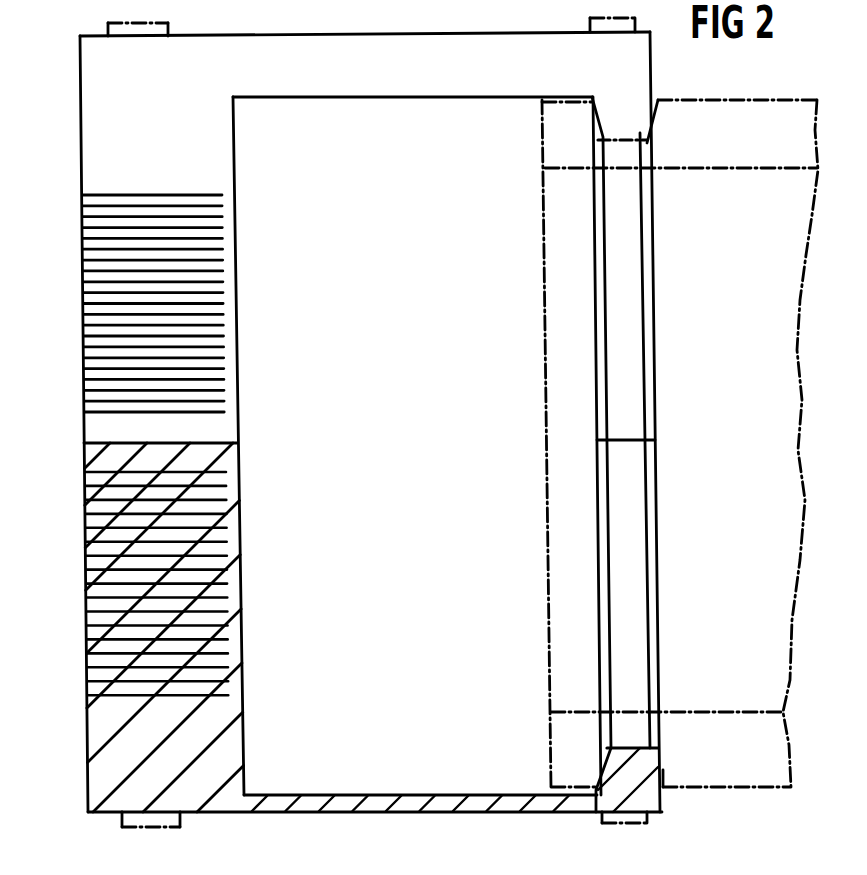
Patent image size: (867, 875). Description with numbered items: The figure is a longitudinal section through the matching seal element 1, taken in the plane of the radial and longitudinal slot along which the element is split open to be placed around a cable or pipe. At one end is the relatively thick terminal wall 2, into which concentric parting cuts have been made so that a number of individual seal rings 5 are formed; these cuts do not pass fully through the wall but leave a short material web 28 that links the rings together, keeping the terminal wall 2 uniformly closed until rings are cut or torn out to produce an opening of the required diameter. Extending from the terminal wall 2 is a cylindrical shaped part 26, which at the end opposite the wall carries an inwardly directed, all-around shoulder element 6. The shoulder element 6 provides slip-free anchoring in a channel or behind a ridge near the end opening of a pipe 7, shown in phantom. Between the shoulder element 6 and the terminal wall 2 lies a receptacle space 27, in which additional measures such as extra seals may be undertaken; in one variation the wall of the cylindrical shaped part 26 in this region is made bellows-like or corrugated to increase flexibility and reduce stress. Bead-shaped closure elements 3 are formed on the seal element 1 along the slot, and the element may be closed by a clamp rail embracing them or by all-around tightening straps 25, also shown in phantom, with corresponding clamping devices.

The matching seal element 1 is at (80, 747).
The terminal wall 2 is at (97, 157).
The bead-shaped closure elements 3 is at (377, 63).
The seal rings 5 is at (97, 229).
The shoulder element 6 is at (640, 120).
The pipe 7 is at (797, 143).
The tightening straps 25 is at (163, 27).
The cylindrical shaped part 26 is at (305, 803).
The receptacle space 27 is at (477, 773).
The web 28 is at (227, 283).